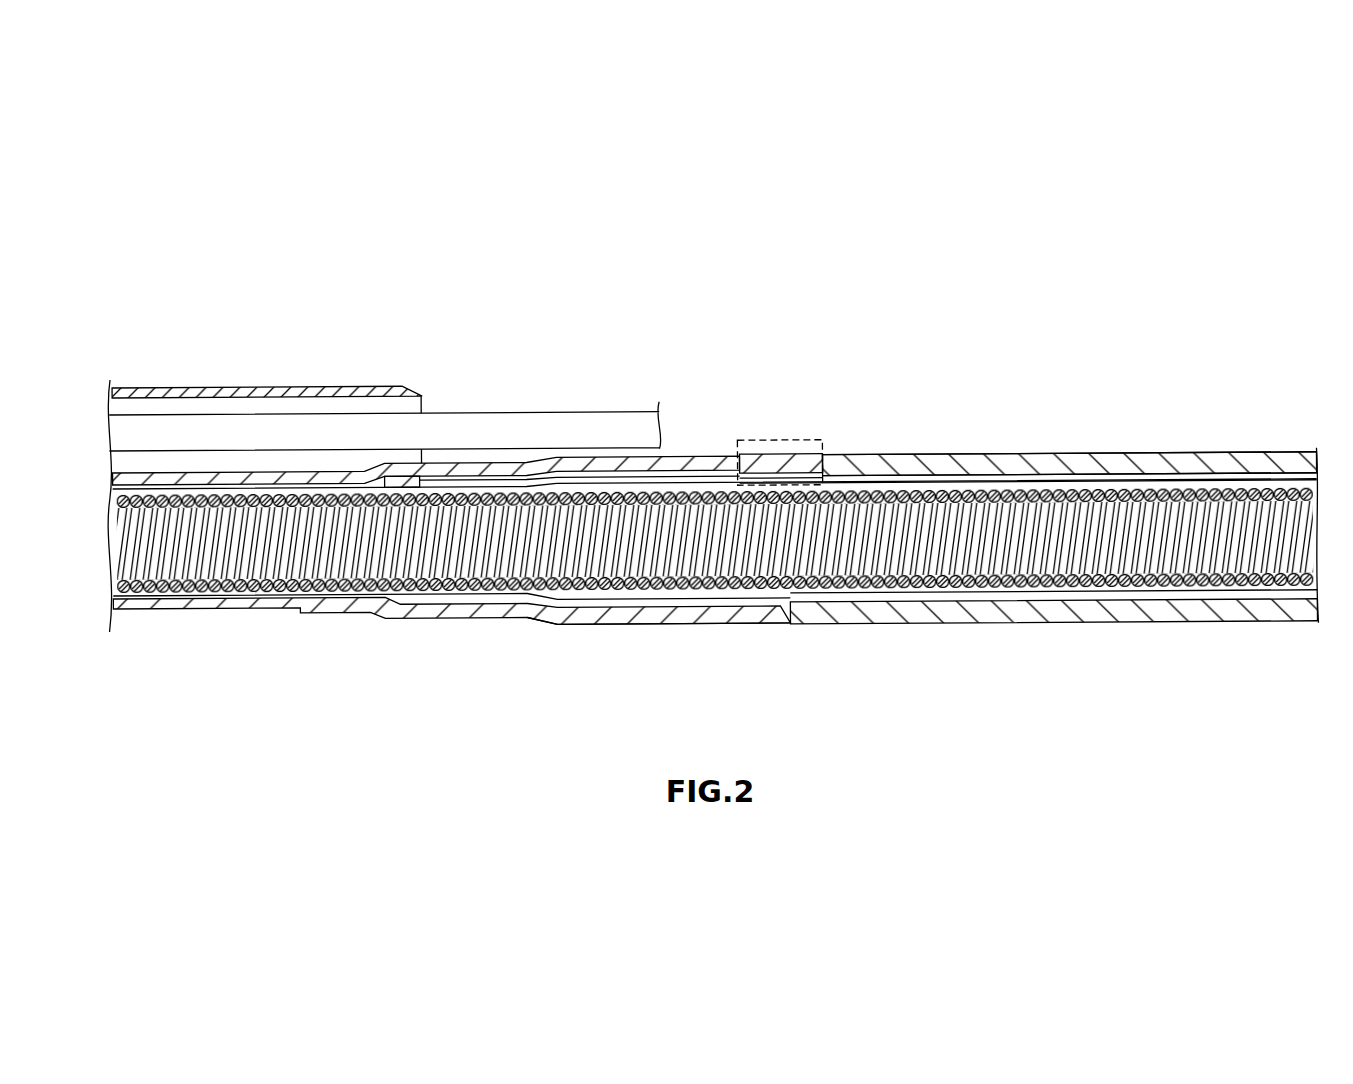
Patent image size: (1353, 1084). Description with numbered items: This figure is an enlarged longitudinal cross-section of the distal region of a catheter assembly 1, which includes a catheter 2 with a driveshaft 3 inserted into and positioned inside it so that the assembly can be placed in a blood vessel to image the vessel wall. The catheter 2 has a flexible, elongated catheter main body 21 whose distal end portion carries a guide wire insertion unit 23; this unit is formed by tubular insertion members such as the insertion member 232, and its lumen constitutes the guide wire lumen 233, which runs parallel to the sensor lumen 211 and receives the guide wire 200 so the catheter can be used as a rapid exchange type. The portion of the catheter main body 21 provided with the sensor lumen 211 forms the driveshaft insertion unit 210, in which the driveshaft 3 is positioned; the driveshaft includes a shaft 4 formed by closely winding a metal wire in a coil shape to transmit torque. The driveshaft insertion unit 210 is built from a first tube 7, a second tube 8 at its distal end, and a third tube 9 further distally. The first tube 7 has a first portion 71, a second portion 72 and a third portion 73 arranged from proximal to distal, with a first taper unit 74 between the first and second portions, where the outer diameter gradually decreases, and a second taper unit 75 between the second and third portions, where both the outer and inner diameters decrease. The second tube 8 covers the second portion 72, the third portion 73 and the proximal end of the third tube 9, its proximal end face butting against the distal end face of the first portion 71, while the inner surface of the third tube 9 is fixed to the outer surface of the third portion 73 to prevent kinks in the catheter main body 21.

The catheter assembly 1 is at (1087, 290).
The catheter 2 is at (1008, 407).
The catheter main body 21 is at (946, 453).
The driveshaft insertion unit 210 is at (889, 453).
The sensor lumen 211 is at (1133, 598).
The guide wire insertion unit 23 is at (218, 384).
The insertion member 232 is at (290, 394).
The guide wire lumen 233 is at (368, 409).
The guide wire 200 is at (515, 435).
The driveshaft 3 is at (1082, 488).
The shaft 4 is at (1137, 488).
The first tube 7 is at (836, 473).
The first portion 71 is at (1015, 472).
The second portion 72 is at (683, 466).
The third portion 73 is at (470, 614).
The first taper unit 74 is at (784, 631).
The second taper unit 75 is at (543, 615).
The second tube 8 is at (724, 466).
The third tube 9 is at (230, 603).